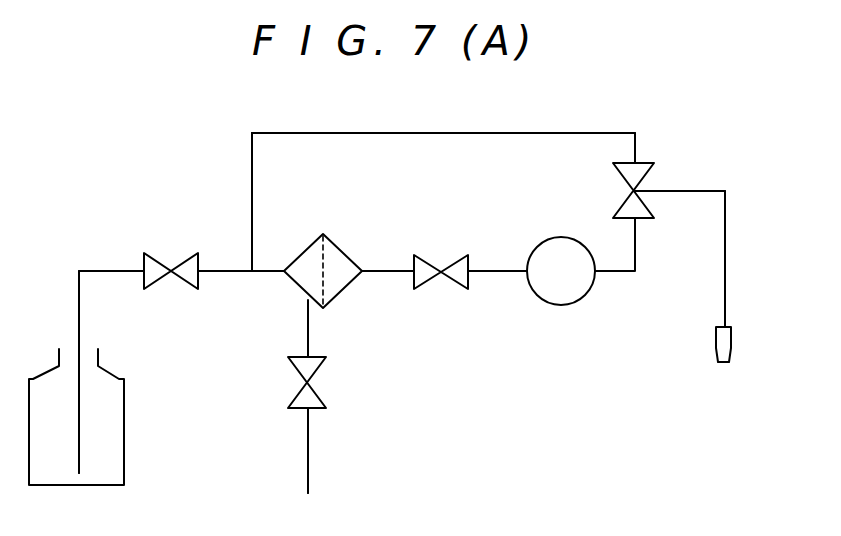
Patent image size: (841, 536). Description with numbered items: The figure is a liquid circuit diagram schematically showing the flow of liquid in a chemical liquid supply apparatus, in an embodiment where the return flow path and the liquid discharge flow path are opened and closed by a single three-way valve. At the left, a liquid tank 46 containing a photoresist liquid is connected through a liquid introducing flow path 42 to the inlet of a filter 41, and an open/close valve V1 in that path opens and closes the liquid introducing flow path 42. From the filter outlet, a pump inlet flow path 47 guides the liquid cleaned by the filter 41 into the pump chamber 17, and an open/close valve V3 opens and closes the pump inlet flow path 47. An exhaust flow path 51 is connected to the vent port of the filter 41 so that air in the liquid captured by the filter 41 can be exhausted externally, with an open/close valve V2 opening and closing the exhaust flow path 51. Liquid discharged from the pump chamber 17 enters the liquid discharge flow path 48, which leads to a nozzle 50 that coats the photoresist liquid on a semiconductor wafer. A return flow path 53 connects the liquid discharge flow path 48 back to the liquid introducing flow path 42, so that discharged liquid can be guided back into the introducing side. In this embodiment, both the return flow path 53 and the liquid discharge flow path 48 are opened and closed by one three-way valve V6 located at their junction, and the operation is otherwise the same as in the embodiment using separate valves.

The open/close valve V1 is at (155, 264).
The open/close valve V2 is at (315, 367).
The open/close valve V3 is at (453, 281).
The three-way valve V6 is at (638, 173).
The filter 41 is at (342, 250).
The liquid introducing flow path 42 is at (234, 271).
The liquid tank 46 is at (124, 422).
The pump inlet flow path 47 is at (500, 275).
The liquid discharge flow path 48 is at (685, 193).
The nozzle 50 is at (716, 340).
The exhaust flow path 51 is at (309, 448).
The return flow path 53 is at (483, 134).
The pump chamber 17 is at (578, 290).